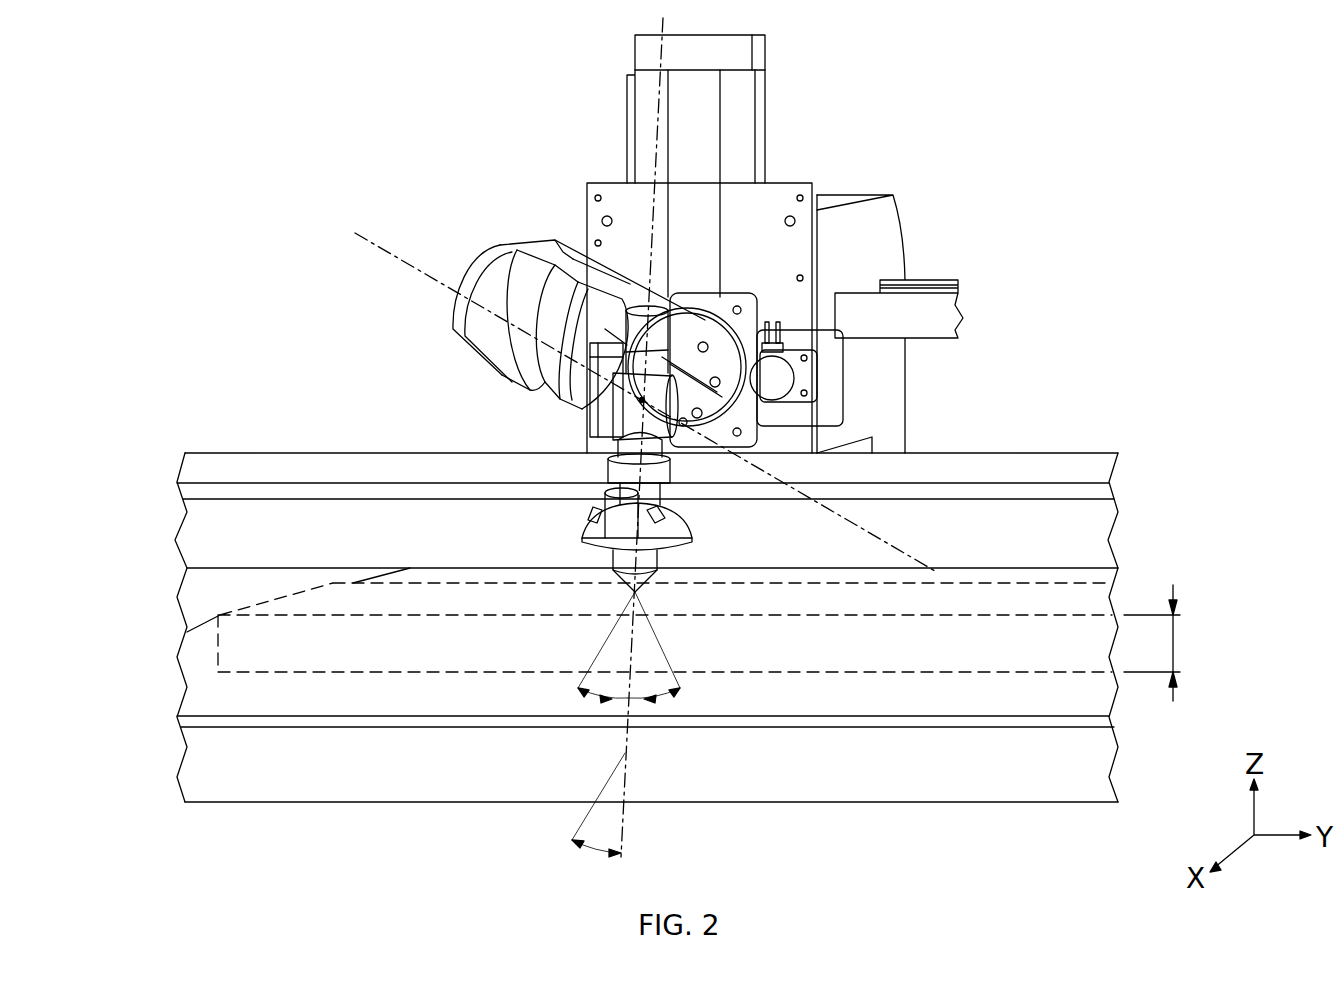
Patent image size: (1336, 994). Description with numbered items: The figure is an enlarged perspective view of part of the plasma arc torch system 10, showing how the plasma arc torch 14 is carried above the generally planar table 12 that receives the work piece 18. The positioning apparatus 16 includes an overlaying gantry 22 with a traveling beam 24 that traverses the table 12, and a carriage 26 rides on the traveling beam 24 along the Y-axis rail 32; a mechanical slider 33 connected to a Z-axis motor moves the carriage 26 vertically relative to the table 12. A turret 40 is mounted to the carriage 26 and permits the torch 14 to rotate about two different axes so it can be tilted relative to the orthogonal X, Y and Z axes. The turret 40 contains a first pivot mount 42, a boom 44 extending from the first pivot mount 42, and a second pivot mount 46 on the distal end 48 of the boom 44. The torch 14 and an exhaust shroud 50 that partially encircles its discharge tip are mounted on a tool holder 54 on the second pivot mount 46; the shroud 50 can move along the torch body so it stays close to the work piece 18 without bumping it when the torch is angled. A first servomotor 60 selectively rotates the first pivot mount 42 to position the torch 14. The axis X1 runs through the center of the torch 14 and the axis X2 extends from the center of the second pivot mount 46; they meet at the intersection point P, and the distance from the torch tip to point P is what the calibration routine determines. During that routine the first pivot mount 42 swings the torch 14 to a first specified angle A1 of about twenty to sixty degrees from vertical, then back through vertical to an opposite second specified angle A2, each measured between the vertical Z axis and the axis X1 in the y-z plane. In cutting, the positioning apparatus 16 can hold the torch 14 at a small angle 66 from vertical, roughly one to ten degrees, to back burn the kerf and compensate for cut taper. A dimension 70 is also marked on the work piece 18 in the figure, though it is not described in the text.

The plasma arc torch system 10 is at (400, 210).
The table 12 is at (202, 627).
The plasma arc torch 14 is at (672, 472).
The positioning apparatus 16 is at (567, 228).
The work piece 18 is at (213, 650).
The gantry 22 is at (843, 198).
The traveling beam 24 is at (253, 453).
The carriage 26 is at (698, 297).
The Y-axis rail 32 is at (315, 453).
The mechanical slider 33 is at (760, 106).
The turret 40 is at (483, 265).
The first pivot mount 42 is at (746, 320).
The boom 44 is at (538, 238).
The second pivot mount 46 is at (535, 390).
The distal end 48 is at (475, 347).
The exhaust shroud 50 is at (692, 527).
The tool holder 54 is at (583, 428).
The first servomotor 60 is at (813, 380).
The small angle 66 is at (600, 853).
The layer thickness 70 is at (1157, 643).
The intersection point P is at (640, 400).
The torch axis X1 is at (627, 745).
The second pivot mount axis X2 is at (908, 548).
The first specified angle A1 is at (657, 697).
The second specified angle A2 is at (600, 695).